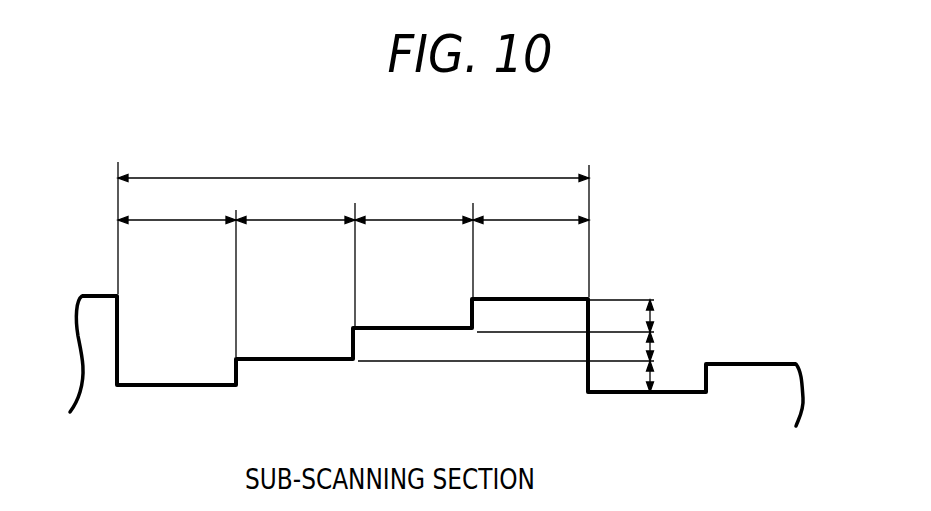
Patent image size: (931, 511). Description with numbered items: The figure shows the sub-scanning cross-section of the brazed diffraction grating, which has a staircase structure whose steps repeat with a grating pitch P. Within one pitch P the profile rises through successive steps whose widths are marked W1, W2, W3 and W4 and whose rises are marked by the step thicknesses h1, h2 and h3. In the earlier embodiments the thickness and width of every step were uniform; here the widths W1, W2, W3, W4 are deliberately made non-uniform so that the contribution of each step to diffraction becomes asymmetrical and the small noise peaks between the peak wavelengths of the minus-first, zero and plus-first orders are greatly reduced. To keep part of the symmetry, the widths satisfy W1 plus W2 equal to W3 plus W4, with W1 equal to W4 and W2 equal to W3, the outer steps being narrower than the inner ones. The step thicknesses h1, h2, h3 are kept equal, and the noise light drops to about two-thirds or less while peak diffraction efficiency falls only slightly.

The pitch of stepped section P is at (353, 165).
The step width W1 is at (177, 209).
The step width W2 is at (295, 209).
The step width W3 is at (414, 209).
The step width W4 is at (531, 209).
The step thickness h1 is at (665, 376).
The step thickness h2 is at (665, 347).
The step thickness h3 is at (665, 316).